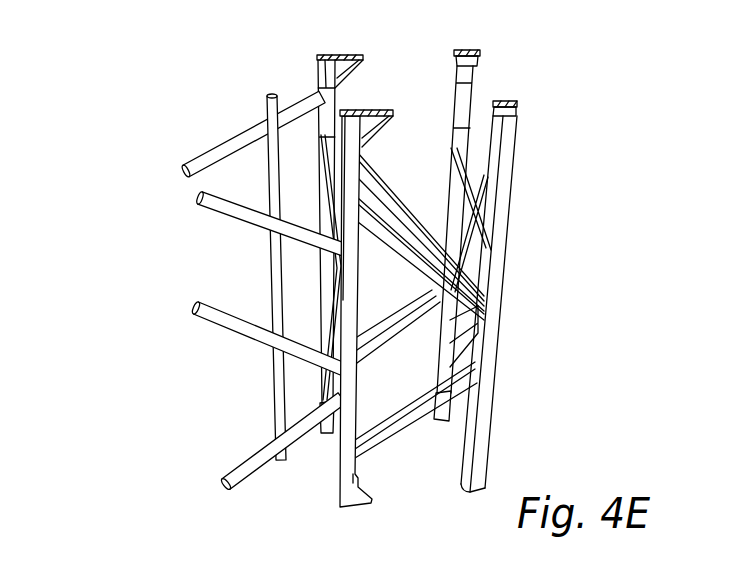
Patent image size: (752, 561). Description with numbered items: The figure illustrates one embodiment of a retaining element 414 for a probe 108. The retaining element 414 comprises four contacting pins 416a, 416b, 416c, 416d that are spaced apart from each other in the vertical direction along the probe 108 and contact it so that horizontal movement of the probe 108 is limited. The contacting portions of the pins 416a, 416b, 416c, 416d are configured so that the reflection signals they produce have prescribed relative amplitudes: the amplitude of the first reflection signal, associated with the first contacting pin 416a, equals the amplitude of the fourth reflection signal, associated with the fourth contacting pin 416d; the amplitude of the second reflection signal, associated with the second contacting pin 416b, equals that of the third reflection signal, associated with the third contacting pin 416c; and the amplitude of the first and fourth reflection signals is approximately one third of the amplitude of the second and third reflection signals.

The probe 108 is at (267, 111).
The retaining element 414 is at (417, 271).
The contacting pin 416a is at (210, 147).
The contacting pin 416b is at (217, 210).
The contacting pin 416c is at (215, 323).
The contacting pin 416d is at (233, 468).